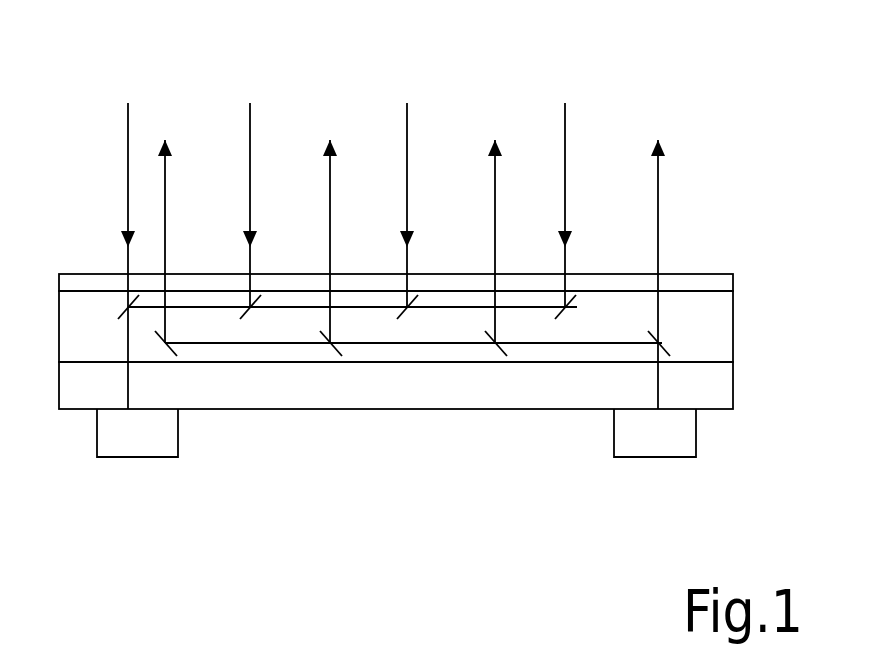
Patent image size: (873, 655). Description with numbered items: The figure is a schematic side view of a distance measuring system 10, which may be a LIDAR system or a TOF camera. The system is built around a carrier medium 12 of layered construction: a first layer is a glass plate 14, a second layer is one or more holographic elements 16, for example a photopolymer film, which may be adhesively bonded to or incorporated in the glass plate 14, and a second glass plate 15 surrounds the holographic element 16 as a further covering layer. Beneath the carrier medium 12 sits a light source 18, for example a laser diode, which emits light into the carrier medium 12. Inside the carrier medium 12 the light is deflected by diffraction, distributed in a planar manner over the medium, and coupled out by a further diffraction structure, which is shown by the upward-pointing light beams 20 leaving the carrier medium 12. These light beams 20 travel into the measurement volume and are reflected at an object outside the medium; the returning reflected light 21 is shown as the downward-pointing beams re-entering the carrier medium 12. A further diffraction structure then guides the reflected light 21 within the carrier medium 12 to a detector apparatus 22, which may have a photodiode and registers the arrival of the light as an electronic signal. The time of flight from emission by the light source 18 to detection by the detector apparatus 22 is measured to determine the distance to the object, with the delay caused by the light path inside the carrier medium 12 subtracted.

The distance measuring system 10 is at (107, 83).
The carrier medium 12 is at (51, 274).
The glass plate 14 is at (723, 286).
The second glass plate 15 is at (723, 388).
The holographic element 16 is at (723, 327).
The light source 18 is at (643, 442).
The light beams 20 is at (658, 223).
The reflected light 21 is at (128, 163).
The detector apparatus 22 is at (137, 442).